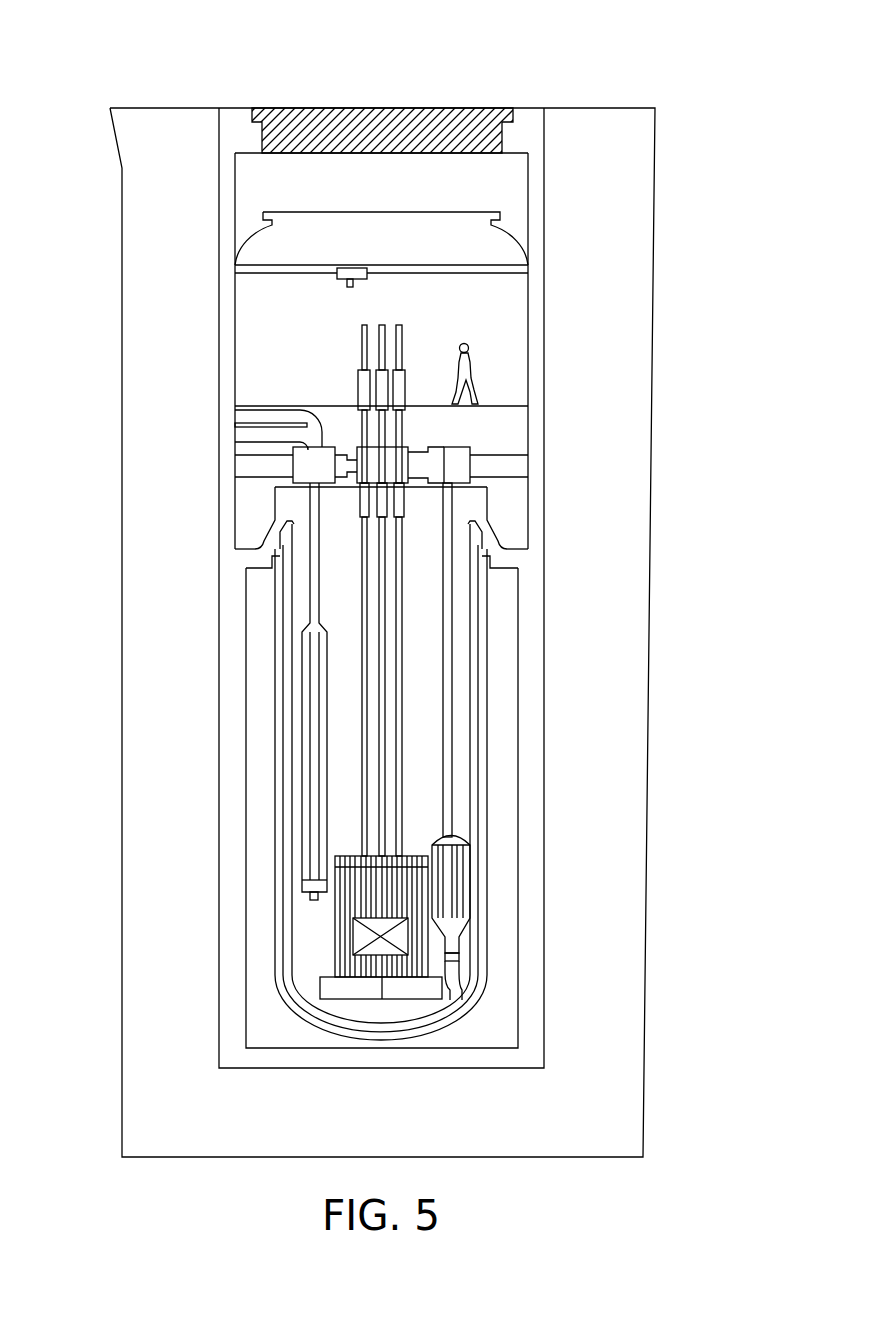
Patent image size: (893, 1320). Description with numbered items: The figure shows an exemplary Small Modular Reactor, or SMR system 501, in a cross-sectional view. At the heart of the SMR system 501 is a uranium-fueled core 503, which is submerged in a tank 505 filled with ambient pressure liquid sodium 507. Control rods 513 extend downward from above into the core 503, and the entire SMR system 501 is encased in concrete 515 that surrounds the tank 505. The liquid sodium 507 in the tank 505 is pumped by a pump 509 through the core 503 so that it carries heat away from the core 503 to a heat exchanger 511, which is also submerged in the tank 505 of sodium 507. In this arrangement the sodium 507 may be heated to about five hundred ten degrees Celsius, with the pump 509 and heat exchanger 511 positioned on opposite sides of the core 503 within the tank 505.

The SMR system 501 is at (443, 579).
The uranium-fueled core 503 is at (234, 927).
The tank 505 is at (513, 780).
The liquid sodium 507 is at (499, 802).
The pump 509 is at (592, 741).
The heat exchanger 511 is at (177, 691).
The control rods 513 is at (216, 570).
The concrete 515 is at (443, 632).